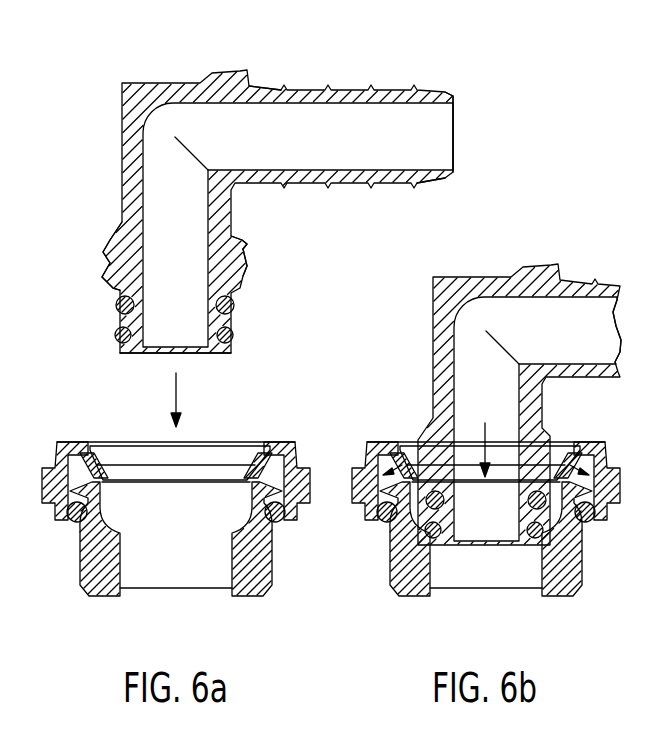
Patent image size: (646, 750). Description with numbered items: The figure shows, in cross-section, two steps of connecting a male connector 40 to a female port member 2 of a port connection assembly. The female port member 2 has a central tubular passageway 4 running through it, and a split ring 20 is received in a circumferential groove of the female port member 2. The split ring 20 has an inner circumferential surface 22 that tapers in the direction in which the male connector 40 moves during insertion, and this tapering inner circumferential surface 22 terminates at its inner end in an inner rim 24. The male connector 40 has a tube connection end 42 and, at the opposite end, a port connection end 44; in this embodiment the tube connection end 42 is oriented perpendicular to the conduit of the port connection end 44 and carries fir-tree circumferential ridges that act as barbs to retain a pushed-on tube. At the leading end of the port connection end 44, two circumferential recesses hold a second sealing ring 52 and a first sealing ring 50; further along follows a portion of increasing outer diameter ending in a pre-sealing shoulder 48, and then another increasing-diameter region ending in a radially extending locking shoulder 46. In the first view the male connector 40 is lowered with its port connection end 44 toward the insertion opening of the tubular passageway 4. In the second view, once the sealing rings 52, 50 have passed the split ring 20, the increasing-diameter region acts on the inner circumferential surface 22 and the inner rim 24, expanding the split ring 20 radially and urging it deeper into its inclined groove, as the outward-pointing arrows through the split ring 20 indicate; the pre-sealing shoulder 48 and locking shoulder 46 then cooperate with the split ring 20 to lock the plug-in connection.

In FIG. 6A, the female port member 2 is at (161, 509).
In FIG. 6B, the female port member 2 is at (489, 540).
In FIG. 6A, the central tubular passageway 4 is at (147, 567).
In FIG. 6B, the central tubular passageway 4 is at (457, 566).
In FIG. 6A, the split ring 20 is at (63, 450).
In FIG. 6A, the inner circumferential surface 22 is at (98, 450).
In FIG. 6A, the inner rim 24 is at (110, 458).
In FIG. 6A, the male connector 40 is at (243, 181).
In FIG. 6A, the tube connection end 42 is at (350, 88).
In FIG. 6A, the port connection end 44 is at (100, 213).
In FIG. 6B, the port connection end 44 is at (422, 437).
In FIG. 6A, the locking shoulder 46 is at (248, 241).
In FIG. 6A, the pre-sealing shoulder 48 is at (248, 265).
In FIG. 6A, the first sealing ring 50 is at (235, 305).
In FIG. 6A, the second sealing ring 52 is at (234, 335).